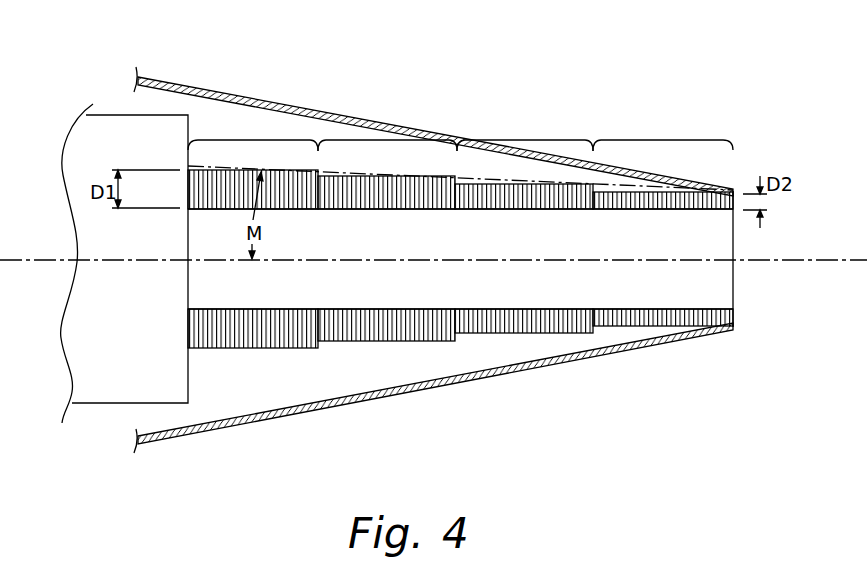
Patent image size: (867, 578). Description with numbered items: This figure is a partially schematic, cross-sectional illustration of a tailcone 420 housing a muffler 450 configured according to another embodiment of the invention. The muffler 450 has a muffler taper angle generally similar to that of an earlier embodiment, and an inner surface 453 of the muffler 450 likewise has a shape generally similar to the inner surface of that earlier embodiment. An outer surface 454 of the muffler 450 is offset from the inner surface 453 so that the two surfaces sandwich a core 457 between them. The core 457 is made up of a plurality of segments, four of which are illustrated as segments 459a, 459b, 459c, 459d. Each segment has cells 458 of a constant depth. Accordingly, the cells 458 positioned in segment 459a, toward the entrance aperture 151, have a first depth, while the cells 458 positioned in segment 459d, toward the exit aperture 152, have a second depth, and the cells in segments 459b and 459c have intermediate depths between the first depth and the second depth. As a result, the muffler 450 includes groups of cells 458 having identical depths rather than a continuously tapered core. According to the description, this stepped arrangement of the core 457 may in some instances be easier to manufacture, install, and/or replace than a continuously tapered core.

The tailcone 420 is at (640, 70).
The muffler 450 is at (422, 355).
The inner surface 453 is at (472, 210).
The outer surface 454 is at (617, 205).
The core 457 is at (183, 183).
The cells 458 is at (391, 198).
The first segment 459a is at (252, 138).
The second segment 459b is at (370, 139).
The third segment 459c is at (523, 139).
The fourth segment 459d is at (663, 139).
The entrance aperture 151 is at (188, 290).
The exit aperture 152 is at (733, 290).